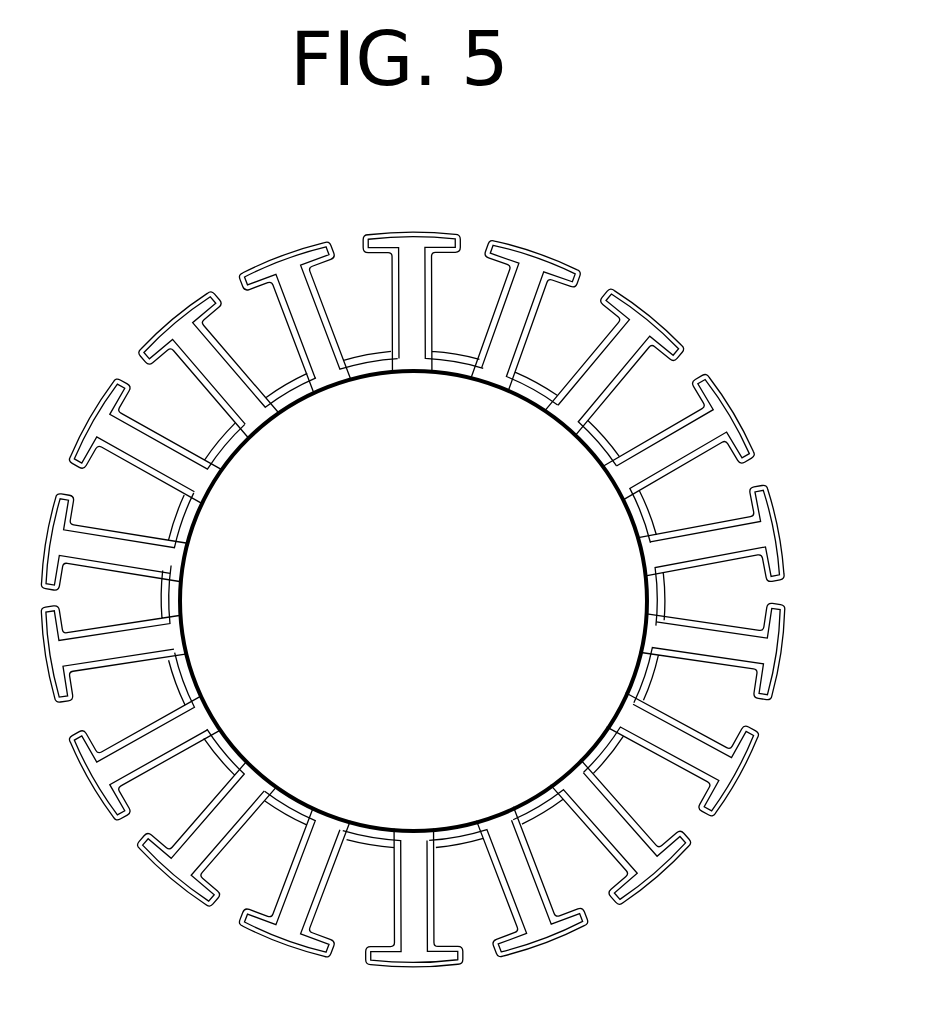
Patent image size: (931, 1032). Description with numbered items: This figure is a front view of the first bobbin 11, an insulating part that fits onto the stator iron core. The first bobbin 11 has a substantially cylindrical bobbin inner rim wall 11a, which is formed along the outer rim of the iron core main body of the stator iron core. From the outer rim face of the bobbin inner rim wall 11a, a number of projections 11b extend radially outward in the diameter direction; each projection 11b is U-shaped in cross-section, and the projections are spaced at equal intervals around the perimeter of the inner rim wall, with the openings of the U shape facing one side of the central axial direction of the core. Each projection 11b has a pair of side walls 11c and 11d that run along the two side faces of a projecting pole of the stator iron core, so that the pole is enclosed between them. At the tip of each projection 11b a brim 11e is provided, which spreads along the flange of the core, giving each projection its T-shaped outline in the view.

The first bobbin 11 is at (501, 238).
The bobbin inner rim wall 11a is at (528, 406).
The projection 11b is at (633, 372).
The side wall 11c is at (672, 457).
The side wall 11d is at (657, 437).
The brim 11e is at (744, 481).